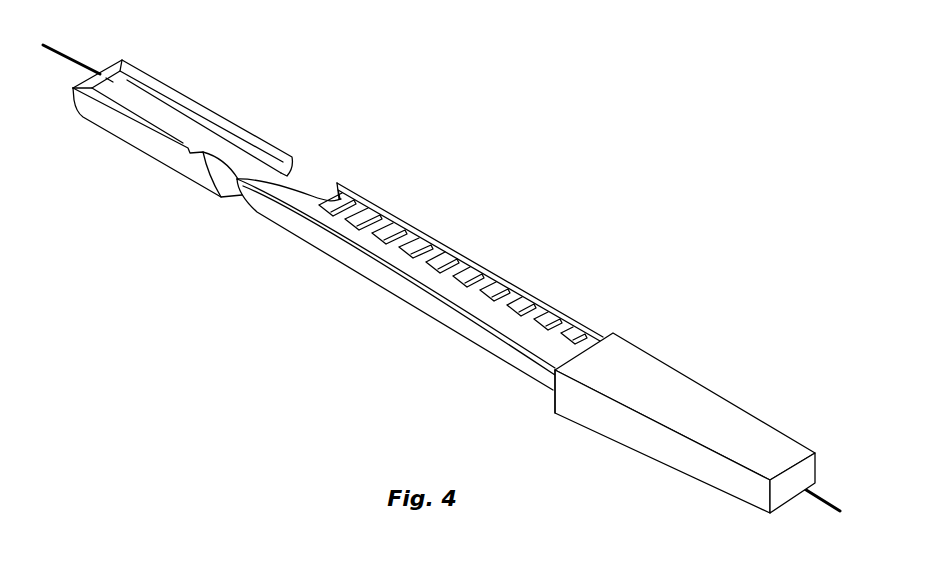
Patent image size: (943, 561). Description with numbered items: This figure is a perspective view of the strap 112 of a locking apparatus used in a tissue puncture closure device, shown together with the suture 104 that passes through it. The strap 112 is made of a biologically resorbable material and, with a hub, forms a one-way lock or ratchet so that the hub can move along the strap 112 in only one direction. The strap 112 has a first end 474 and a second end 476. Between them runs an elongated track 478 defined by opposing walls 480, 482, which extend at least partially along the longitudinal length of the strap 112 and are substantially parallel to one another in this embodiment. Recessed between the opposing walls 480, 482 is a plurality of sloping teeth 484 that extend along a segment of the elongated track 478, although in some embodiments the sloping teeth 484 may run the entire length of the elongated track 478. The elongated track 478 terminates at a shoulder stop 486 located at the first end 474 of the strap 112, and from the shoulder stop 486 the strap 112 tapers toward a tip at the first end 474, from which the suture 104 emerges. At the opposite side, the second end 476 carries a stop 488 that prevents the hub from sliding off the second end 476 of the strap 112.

The suture 104 is at (53, 56).
The strap 112 is at (457, 176).
The first end 474 is at (722, 475).
The second end 476 is at (157, 142).
The elongated track 478 is at (125, 107).
The opposing wall 480 is at (541, 300).
The opposing wall 482 is at (413, 288).
The sloping teeth 484 is at (365, 243).
The shoulder stop 486 is at (548, 398).
The stop 488 is at (118, 72).